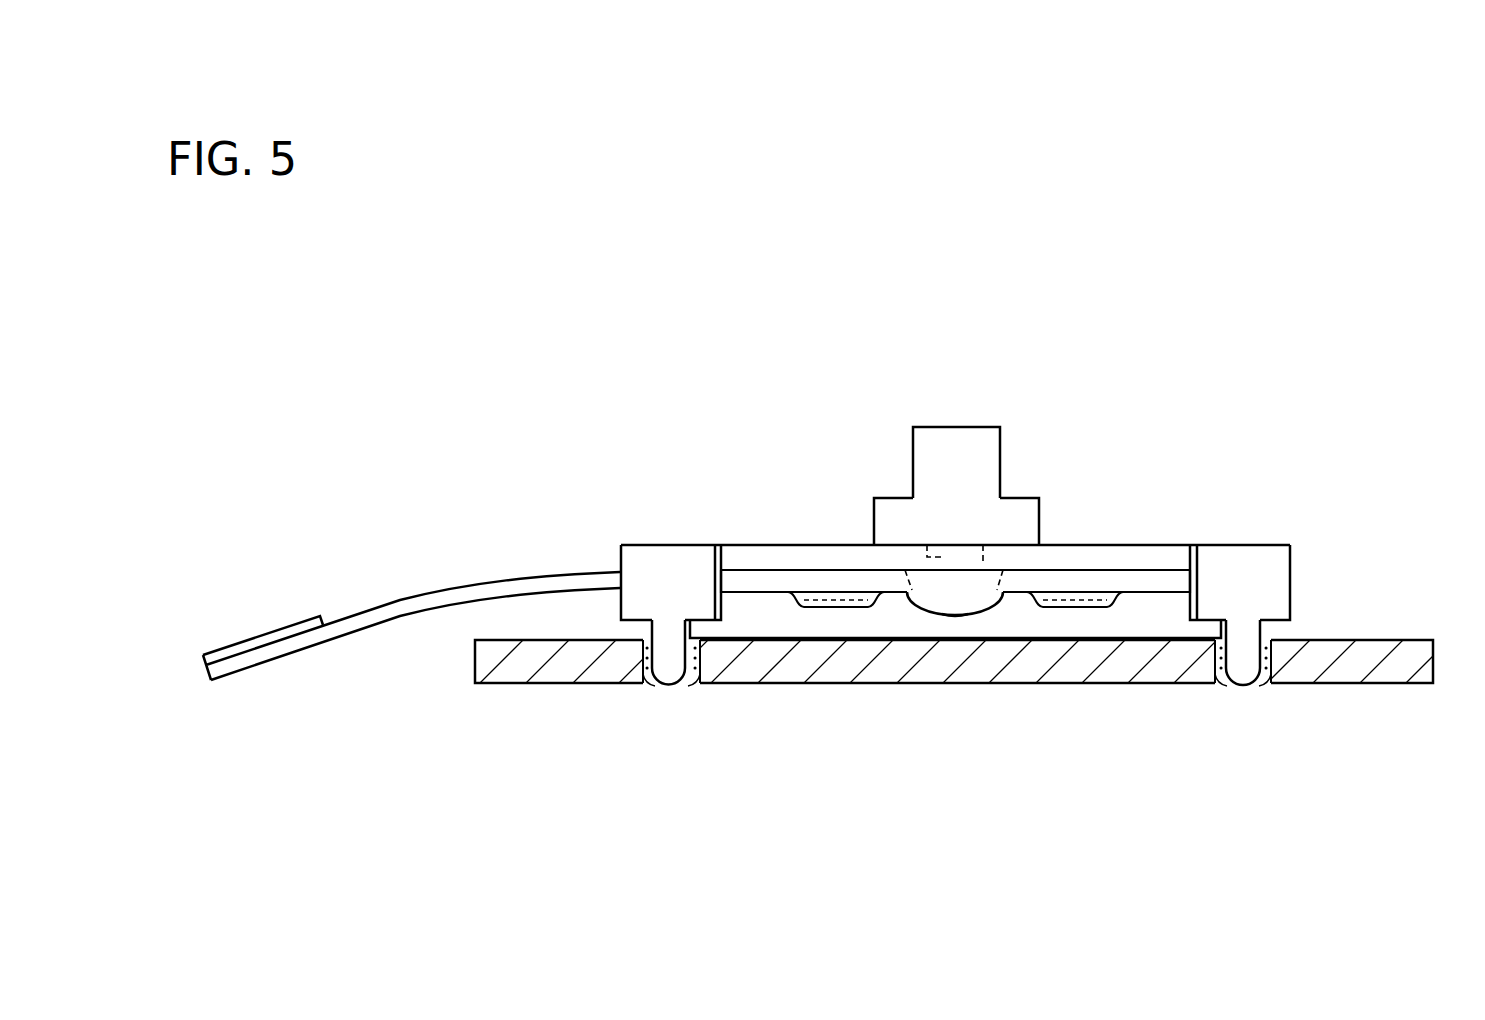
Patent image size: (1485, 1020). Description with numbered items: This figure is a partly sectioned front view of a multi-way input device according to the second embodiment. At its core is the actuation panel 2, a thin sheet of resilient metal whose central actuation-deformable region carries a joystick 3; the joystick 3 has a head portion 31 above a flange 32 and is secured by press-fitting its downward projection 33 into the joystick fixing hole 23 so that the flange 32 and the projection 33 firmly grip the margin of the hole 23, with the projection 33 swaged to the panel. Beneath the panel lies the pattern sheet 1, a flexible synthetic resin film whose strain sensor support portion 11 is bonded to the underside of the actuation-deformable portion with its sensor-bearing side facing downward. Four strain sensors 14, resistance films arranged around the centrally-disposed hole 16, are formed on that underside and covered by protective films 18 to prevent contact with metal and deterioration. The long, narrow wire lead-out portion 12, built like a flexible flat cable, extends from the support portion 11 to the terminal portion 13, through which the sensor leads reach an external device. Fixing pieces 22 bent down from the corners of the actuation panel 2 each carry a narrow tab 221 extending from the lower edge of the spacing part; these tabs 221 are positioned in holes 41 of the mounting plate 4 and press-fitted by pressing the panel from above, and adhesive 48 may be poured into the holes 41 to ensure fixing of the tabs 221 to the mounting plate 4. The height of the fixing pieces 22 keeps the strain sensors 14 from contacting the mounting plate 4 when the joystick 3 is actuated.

The pattern sheet 1 is at (399, 578).
The actuation panel 2 is at (1009, 553).
The joystick 3 is at (1006, 446).
The mounting plate 4 is at (1333, 691).
The strain sensor support portion 11 is at (857, 577).
The wire lead-out portion 12 is at (563, 572).
The terminal portion 13 is at (278, 630).
The strain sensor 14 is at (830, 600).
The centrally-disposed hole 16 is at (915, 596).
The protective film 18 is at (780, 596).
The fixing piece 22 is at (1283, 578).
The joystick fixing hole 23 is at (944, 560).
The actuator head 31 is at (994, 459).
The flange 32 is at (1040, 525).
The downward projection 33 is at (960, 608).
The hole 41 is at (650, 686).
The adhesive 48 is at (1263, 640).
The tab 221 is at (672, 672).